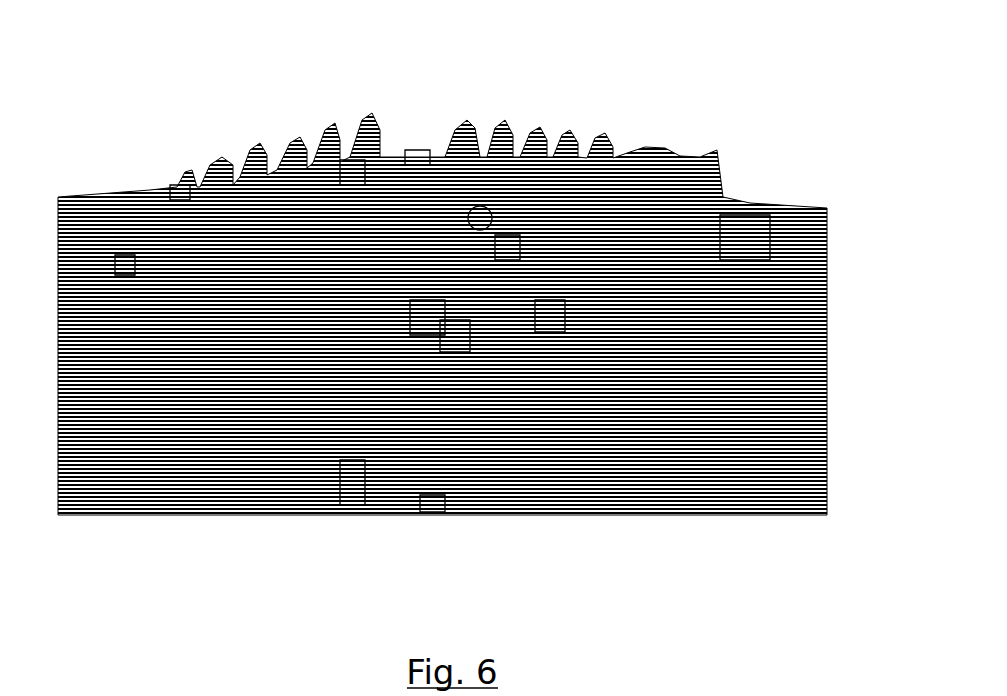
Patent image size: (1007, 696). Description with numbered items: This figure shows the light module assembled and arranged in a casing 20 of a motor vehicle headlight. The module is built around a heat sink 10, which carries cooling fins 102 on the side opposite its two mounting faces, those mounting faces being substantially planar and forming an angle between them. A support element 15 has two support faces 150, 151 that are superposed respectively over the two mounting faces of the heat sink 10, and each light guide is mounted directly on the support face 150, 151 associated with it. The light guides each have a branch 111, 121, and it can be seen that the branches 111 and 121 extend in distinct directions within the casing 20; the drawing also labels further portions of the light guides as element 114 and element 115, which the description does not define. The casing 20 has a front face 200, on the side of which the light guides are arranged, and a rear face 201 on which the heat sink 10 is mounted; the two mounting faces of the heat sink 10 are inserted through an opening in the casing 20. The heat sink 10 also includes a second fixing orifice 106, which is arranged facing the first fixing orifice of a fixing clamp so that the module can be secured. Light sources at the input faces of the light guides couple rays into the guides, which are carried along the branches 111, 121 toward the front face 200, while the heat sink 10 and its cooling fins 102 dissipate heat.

The heat sink 10 is at (175, 290).
The casing 20 is at (180, 185).
The branch 111 is at (125, 263).
The cooling fins 102 is at (352, 165).
The rear face 201 is at (423, 113).
The second fixing orifice 106 is at (480, 207).
The support face 151 is at (505, 237).
The branch 121 is at (745, 217).
The lower bracket 114 is at (352, 505).
The front face 200 is at (439, 537).
The support face 150 is at (425, 330).
The support element 15 is at (453, 350).
The support bracket 115 is at (548, 330).